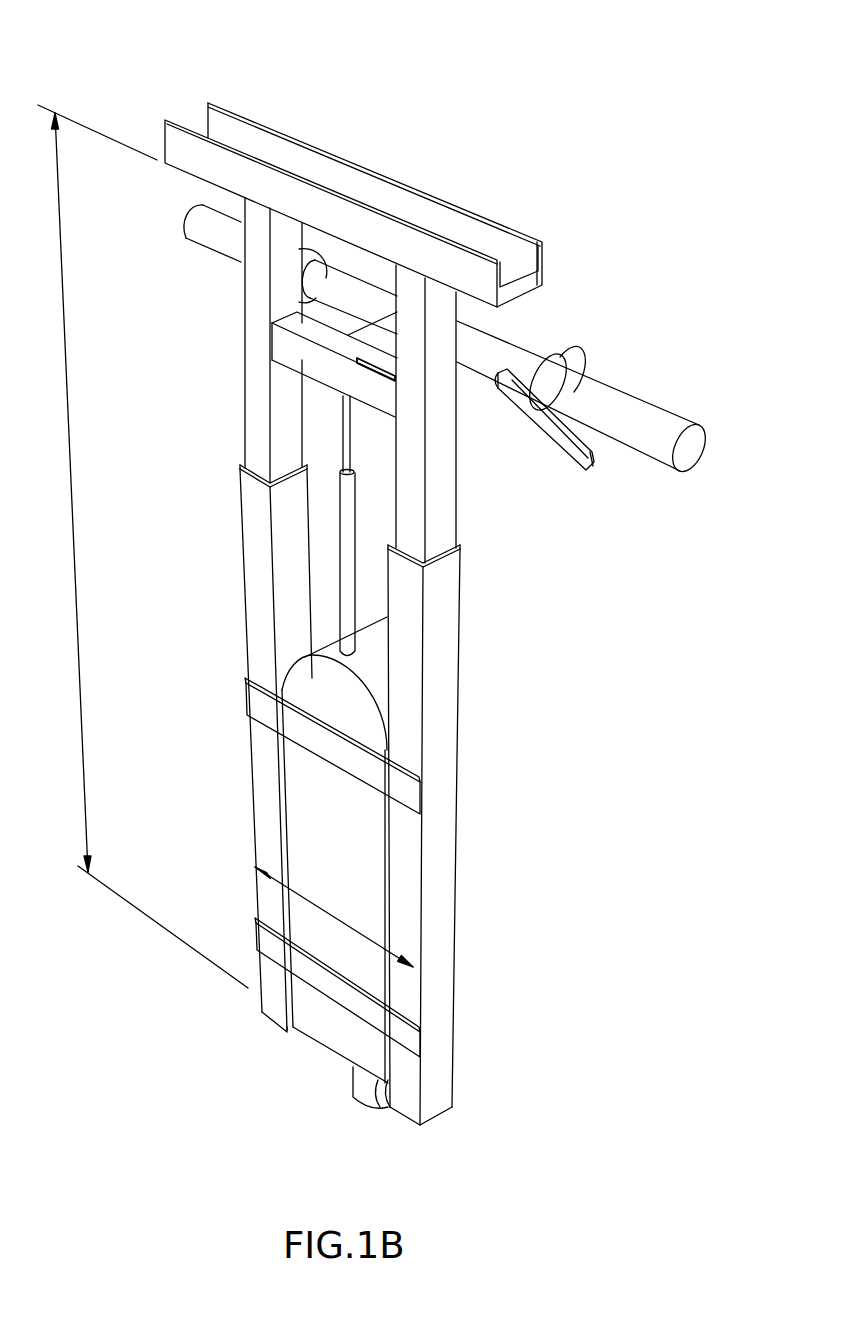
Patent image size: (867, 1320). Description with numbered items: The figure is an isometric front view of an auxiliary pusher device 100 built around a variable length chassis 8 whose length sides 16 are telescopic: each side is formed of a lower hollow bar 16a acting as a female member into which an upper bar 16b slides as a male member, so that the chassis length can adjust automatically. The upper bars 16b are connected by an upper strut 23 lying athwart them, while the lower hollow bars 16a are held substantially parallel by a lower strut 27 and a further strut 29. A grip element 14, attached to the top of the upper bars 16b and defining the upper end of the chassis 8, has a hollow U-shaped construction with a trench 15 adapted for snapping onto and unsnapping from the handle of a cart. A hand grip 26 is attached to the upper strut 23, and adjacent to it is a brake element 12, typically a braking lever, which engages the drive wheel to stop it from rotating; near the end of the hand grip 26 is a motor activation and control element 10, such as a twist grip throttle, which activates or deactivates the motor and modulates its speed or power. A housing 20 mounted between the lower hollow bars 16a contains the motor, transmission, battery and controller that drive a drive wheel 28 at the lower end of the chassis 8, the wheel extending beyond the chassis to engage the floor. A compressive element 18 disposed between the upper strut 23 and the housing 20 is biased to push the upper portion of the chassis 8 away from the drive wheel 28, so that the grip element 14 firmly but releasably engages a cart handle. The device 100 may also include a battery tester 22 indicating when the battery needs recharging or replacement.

The auxiliary pusher device 100 is at (507, 83).
The grip element 14 is at (473, 212).
The trench 15 is at (517, 282).
The motor activation and control element 10 is at (217, 257).
The hand grip 26 is at (508, 344).
The brake element 12 is at (557, 437).
The battery tester 22 is at (377, 362).
The upper strut 23 is at (387, 395).
The compressive element 18 is at (347, 575).
The length sides 16 is at (352, 661).
The lower hollow bars 16a is at (167, 455).
The upper bars 16b is at (242, 417).
The housing 20 is at (350, 853).
The strut 29 is at (408, 788).
The lower strut 27 is at (267, 940).
The drive wheel 28 is at (358, 1085).
The chassis 8 is at (215, 505).